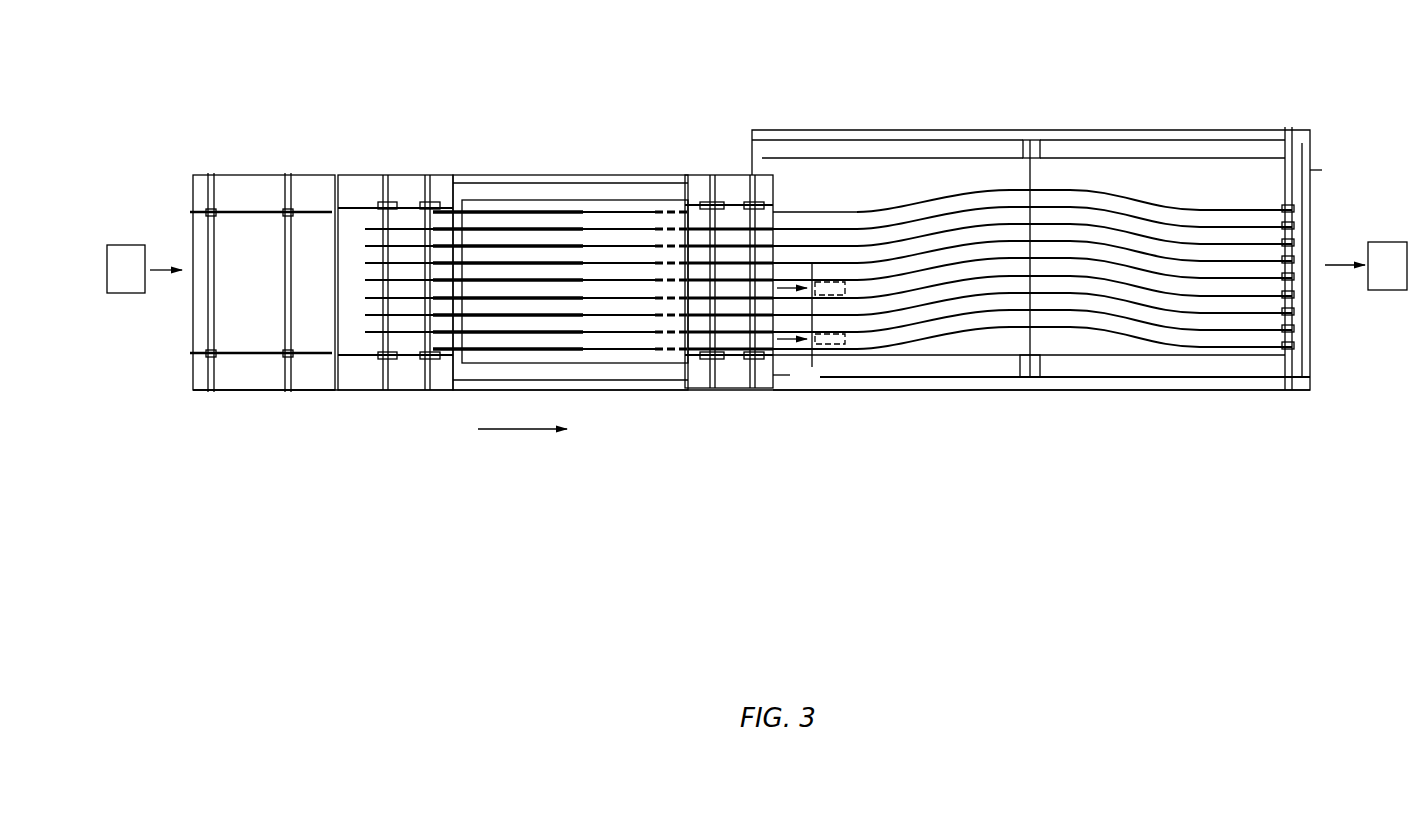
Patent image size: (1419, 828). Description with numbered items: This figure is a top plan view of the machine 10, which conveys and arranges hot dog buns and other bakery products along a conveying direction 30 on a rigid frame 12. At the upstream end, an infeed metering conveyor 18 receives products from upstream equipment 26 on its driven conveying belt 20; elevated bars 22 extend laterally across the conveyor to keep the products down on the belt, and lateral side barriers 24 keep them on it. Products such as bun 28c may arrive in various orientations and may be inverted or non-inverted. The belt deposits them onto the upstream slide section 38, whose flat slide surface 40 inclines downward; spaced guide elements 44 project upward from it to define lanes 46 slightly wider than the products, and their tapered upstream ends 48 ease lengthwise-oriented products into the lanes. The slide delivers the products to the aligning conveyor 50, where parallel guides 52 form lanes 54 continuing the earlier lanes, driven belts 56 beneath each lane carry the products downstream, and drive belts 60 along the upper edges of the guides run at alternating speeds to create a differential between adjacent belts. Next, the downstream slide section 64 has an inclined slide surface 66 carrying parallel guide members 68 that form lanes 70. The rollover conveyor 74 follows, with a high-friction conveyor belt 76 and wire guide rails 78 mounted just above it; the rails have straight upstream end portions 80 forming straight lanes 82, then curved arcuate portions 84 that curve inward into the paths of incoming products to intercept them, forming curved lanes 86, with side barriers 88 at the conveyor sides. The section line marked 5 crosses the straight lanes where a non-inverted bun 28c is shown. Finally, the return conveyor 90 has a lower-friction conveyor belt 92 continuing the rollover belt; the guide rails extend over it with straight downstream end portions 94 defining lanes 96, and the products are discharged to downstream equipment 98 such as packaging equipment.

The machine 10 is at (435, 507).
The rigid frame 12 is at (260, 380).
The infeed metering conveyor 18 is at (275, 410).
The conveying belt 20 is at (222, 230).
The elevated bars 22 is at (212, 330).
The lateral side barriers 24 is at (270, 218).
The upstream equipment 26 is at (124, 245).
The hot dog bun 28c is at (845, 287).
The conveying direction 30 is at (515, 432).
The upstream slide section 38 is at (402, 408).
The slide surface 40 is at (355, 228).
The guide elements 44 is at (402, 257).
The lanes 46 is at (393, 240).
The tapered upstream ends 48 is at (374, 360).
The aligning conveyor 50 is at (643, 420).
The guides 52 is at (477, 205).
The lanes 54 is at (527, 215).
The driven belts 56 is at (660, 225).
The drive belts 60 is at (593, 212).
The downstream slide section 64 is at (707, 420).
The inclined slide surface 66 is at (716, 178).
The guide members 68 is at (733, 362).
The lanes 70 is at (735, 220).
The rollover conveyor 74 is at (892, 120).
The conveyor belt 76 is at (1012, 348).
The guide rails 78 is at (883, 218).
The straight upstream end portions 80 is at (965, 378).
The straight lanes 82 is at (790, 222).
The curved arcuate portions 84 is at (943, 210).
The curved lanes 86 is at (987, 215).
The side barriers 88 is at (777, 140).
The return conveyor 90 is at (1243, 122).
The conveyor belt 92 is at (1108, 172).
The straight downstream end portions 94 is at (1230, 240).
The lanes 96 is at (1153, 277).
The downstream equipment 98 is at (1380, 242).
The section line 5 is at (792, 325).